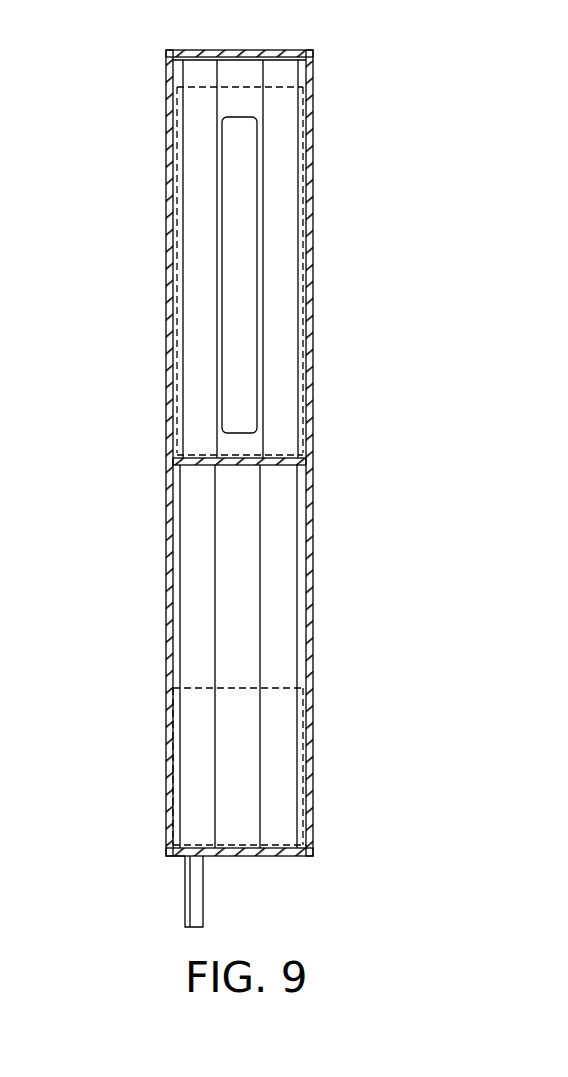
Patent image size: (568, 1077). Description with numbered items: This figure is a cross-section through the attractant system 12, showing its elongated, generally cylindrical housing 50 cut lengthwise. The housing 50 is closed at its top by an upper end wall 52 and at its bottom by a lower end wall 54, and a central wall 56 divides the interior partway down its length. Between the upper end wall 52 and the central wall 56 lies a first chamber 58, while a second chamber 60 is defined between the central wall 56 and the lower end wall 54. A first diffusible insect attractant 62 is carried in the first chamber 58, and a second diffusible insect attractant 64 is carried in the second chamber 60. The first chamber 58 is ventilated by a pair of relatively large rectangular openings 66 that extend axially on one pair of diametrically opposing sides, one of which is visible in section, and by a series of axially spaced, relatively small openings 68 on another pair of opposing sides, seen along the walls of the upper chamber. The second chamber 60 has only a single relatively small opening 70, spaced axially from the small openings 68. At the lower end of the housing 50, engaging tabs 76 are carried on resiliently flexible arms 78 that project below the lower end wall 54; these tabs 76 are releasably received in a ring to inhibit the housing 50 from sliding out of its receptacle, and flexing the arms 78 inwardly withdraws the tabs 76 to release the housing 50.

The attractant system 12 is at (116, 108).
The housing 50 is at (310, 510).
The upper end wall 52 is at (228, 50).
The lower end wall 54 is at (226, 856).
The central wall 56 is at (205, 466).
The first chamber 58 is at (283, 213).
The second chamber 60 is at (285, 633).
The first diffusible insect attractant 62 is at (288, 359).
The second diffusible insect attractant 64 is at (275, 766).
The rectangular openings 66 is at (248, 134).
The small openings 68 is at (167, 153).
The small opening 70 is at (310, 573).
The engaging tabs 76 is at (181, 860).
The resiliently flexible arms 78 is at (197, 919).